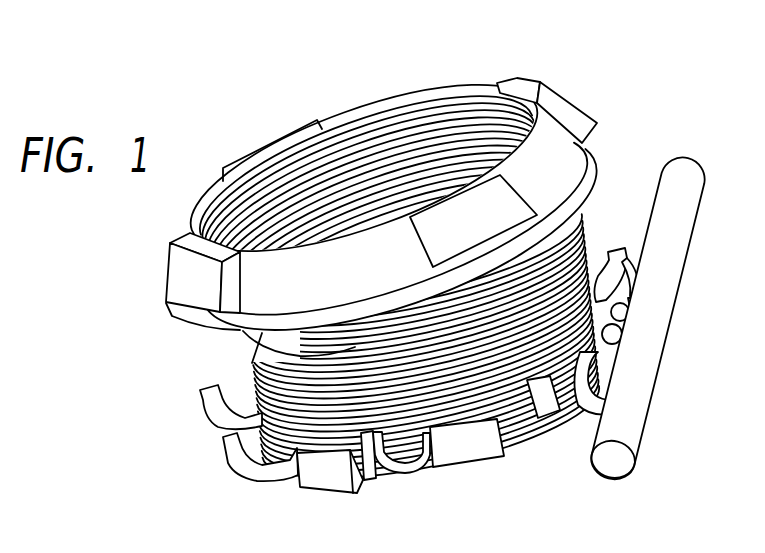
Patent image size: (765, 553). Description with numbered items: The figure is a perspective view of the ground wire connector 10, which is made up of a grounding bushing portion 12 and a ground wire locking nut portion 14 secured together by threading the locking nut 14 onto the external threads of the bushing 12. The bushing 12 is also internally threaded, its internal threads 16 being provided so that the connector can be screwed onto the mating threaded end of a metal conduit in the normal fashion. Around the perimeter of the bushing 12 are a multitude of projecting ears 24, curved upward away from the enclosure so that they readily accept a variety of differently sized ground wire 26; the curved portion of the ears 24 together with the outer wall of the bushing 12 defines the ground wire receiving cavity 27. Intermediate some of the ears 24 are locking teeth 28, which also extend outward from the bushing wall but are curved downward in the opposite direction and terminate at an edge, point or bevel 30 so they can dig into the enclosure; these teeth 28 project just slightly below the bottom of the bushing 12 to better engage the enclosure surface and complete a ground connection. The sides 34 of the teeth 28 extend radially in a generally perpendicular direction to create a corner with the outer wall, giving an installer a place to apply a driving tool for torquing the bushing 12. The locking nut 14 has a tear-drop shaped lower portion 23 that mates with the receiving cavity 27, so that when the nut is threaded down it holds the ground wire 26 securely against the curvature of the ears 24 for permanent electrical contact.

The ground wire connector 10 is at (652, 80).
The grounding bushing portion 12 is at (587, 253).
The ground wire locking nut portion 14 is at (520, 92).
The internal threads 16 is at (262, 345).
The tear-drop lower portion 23 is at (265, 311).
The projecting ears 24 is at (407, 462).
The ground wire 26 is at (630, 403).
The ground wire receiving cavity 27 is at (236, 390).
The locking teeth 28 is at (487, 461).
The edge, point or bevel 30 is at (353, 490).
The sides of teeth 34 is at (361, 482).